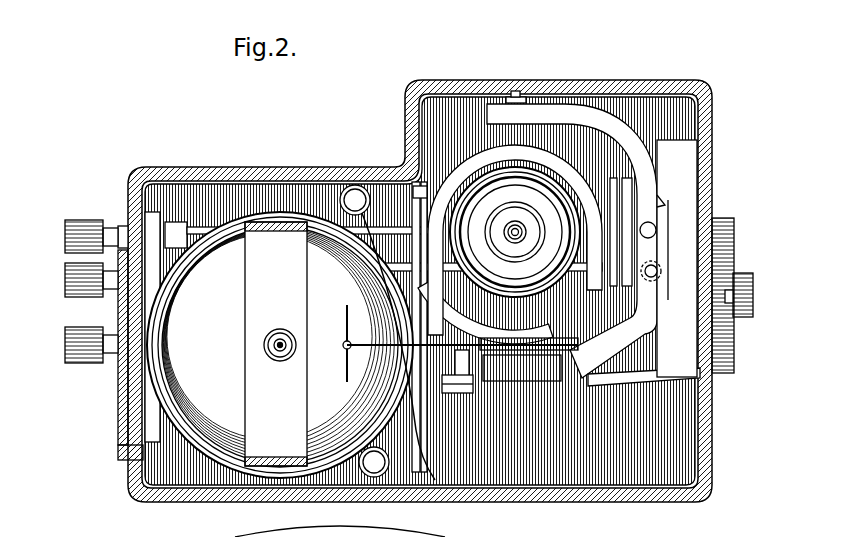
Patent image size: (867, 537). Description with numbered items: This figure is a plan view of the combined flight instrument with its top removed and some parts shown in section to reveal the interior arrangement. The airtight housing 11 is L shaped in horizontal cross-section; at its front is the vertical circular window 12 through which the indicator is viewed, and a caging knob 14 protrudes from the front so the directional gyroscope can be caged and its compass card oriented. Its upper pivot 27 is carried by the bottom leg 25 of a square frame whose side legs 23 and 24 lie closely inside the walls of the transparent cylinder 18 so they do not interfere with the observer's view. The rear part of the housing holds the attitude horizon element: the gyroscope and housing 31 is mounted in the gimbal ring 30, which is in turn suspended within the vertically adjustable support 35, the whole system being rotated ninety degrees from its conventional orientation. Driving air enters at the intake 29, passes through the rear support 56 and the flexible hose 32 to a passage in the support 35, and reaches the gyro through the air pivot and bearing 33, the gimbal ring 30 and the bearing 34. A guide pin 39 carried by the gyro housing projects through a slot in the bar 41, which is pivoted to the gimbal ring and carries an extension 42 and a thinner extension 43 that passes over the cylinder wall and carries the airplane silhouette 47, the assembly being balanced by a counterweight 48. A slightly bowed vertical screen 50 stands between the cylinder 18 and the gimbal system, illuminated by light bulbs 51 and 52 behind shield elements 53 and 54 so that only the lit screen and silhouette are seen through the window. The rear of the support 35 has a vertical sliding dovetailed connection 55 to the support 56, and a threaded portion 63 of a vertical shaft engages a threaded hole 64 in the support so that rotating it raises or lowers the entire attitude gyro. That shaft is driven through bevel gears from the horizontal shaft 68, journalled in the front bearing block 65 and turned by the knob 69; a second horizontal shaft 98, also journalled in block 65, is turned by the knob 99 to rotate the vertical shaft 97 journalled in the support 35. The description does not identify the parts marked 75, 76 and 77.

The housing 11 is at (638, 80).
The window 12 is at (124, 408).
The caging knob 14 is at (88, 363).
The cylinder 18 is at (195, 437).
The side leg 23 is at (290, 228).
The side leg 24 is at (290, 460).
The bottom leg 25 is at (245, 284).
The upper pivot 27 is at (280, 330).
The intake 29 is at (730, 218).
The gimbal ring 30 is at (462, 323).
The gyroscope and housing 31 is at (548, 304).
The flexible hose 32 is at (620, 382).
The air pivot and bearing 33 is at (512, 372).
The bearing 34 is at (590, 225).
The support 35 is at (582, 115).
The guide pin 39 is at (455, 265).
The bar 41 is at (430, 232).
The extension 42 is at (577, 345).
The thinner extension 43 is at (355, 345).
The silhouette 47 is at (345, 362).
The counterweight 48 is at (458, 393).
The screen 50 is at (415, 440).
The light bulb 51 is at (360, 205).
The light bulb 52 is at (365, 475).
The shield element 53 is at (350, 195).
The shield element 54 is at (375, 478).
The dovetailed connection 55 is at (660, 200).
The support 56 is at (693, 149).
The threaded portion 63 is at (650, 281).
The threaded hole 64 is at (607, 331).
The bearing block 65 is at (150, 215).
The horizontal shaft 68 is at (575, 280).
The knob 69 is at (63, 280).
The stop 75 is at (516, 97).
The section line 76 is at (688, 413).
The section line 77 is at (706, 528).
The vertical shaft 97 is at (656, 227).
The horizontal shaft 98 is at (200, 225).
The knob 99 is at (80, 218).